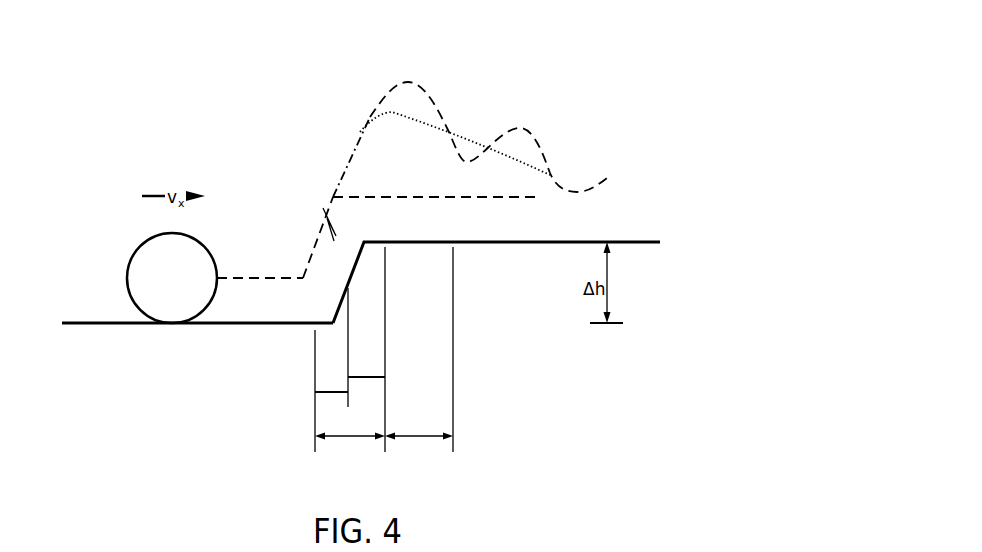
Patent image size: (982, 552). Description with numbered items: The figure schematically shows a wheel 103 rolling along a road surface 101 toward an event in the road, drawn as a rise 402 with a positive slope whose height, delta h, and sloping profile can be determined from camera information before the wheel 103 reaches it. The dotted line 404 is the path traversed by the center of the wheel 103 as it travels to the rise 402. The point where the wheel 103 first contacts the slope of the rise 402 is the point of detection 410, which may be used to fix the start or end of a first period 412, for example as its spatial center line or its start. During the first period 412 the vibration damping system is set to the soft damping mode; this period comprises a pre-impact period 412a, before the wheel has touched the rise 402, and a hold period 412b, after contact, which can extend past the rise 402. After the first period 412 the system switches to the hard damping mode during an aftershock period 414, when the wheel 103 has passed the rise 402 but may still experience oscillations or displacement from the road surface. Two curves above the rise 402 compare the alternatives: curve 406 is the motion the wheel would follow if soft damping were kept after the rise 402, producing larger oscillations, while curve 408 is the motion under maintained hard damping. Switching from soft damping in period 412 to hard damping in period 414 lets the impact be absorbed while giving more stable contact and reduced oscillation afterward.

The road surface 101 is at (180, 352).
The wheel 103 is at (151, 259).
The rise 402 is at (350, 253).
The path 404 is at (377, 197).
The curve 406 is at (476, 108).
The curve 408 is at (455, 113).
The point of detection 410 is at (391, 327).
The pre-impact period 412a is at (298, 391).
The hold period 412b is at (395, 349).
The first period 412 is at (346, 464).
The aftershock period 414 is at (415, 371).